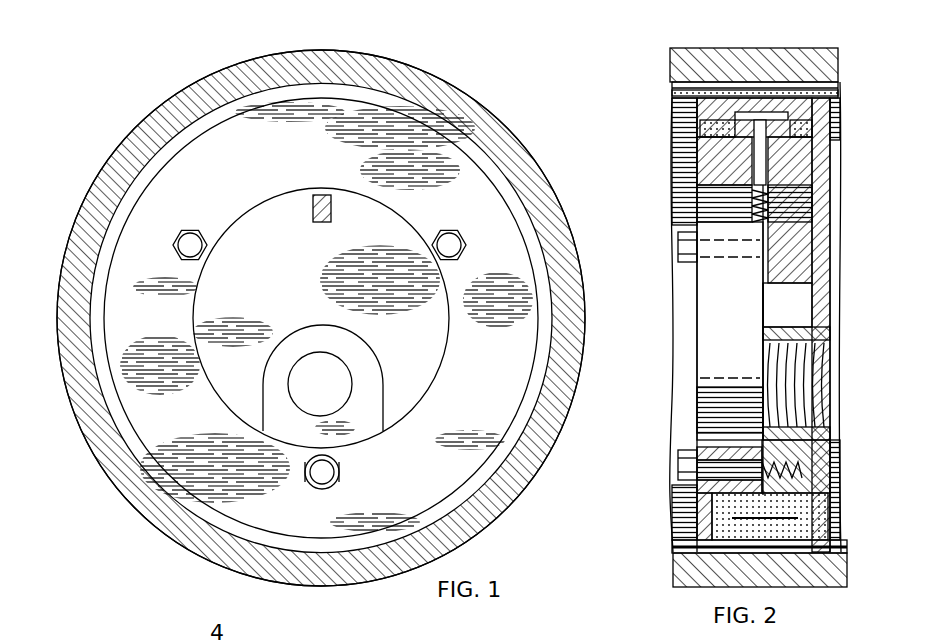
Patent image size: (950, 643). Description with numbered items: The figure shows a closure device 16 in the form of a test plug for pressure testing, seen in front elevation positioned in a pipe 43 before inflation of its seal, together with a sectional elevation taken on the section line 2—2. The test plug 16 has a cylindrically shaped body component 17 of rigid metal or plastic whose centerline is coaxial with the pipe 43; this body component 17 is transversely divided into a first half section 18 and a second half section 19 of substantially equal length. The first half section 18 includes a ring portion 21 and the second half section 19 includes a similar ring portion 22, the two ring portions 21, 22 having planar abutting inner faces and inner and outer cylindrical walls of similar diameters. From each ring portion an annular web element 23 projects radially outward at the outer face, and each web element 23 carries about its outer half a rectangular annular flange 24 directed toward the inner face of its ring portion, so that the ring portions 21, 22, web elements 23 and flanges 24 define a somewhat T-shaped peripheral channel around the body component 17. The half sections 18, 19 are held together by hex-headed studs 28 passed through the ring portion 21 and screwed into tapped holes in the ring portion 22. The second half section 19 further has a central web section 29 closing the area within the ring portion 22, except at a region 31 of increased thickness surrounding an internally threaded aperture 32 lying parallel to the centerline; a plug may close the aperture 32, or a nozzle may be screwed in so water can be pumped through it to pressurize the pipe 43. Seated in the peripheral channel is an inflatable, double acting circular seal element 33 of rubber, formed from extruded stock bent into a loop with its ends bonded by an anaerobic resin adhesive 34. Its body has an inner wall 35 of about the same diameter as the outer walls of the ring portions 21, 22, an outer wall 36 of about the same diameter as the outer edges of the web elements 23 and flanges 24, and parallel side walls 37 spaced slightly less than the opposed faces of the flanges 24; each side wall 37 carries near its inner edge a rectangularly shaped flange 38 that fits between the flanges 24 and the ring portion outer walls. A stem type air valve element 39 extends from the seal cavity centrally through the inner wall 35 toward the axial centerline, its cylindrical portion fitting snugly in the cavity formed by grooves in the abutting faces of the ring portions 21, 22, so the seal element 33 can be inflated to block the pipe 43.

In FIG. 1, the section line 2— 2 is at (318, 137).
In FIG. 1, the closure device 16 is at (203, 177).
In FIG. 1, the body component 17 is at (495, 248).
In FIG. 2, the body component 17 is at (722, 358).
In FIG. 1, the first half section 18 is at (450, 383).
In FIG. 2, the first half section 18 is at (723, 292).
In FIG. 2, the second half section 19 is at (790, 308).
In FIG. 1, the ring portion 21 is at (213, 403).
In FIG. 2, the ring portion 21 is at (727, 160).
In FIG. 2, the ring portion 22 is at (797, 167).
In FIG. 1, the annular web element 23 is at (172, 192).
In FIG. 2, the annular web element 23 is at (680, 132).
In FIG. 2, the annular flange 24 is at (840, 88).
In FIG. 1, the hex-headed stud 28 is at (173, 248).
In FIG. 2, the hex-headed stud 28 is at (695, 260).
In FIG. 1, the central web section 29 is at (370, 232).
In FIG. 2, the central web section 29 is at (813, 282).
In FIG. 1, the region of increased thickness 31 is at (372, 400).
In FIG. 2, the region of increased thickness 31 is at (763, 335).
In FIG. 1, the internally threaded aperture 32 is at (350, 383).
In FIG. 2, the internally threaded aperture 32 is at (805, 375).
In FIG. 2, the circular seal element 33 is at (745, 531).
In FIG. 2, the anaerobic resin adhesive 34 is at (727, 507).
In FIG. 2, the inner wall 35 is at (813, 117).
In FIG. 2, the outer wall 36 is at (728, 85).
In FIG. 2, the side walls 37 is at (810, 85).
In FIG. 2, the rectangularly shaped flange 38 is at (680, 120).
In FIG. 1, the stem type air valve element 39 is at (313, 225).
In FIG. 2, the stem type air valve element 39 is at (697, 197).
In FIG. 1, the pipe 43 is at (190, 92).
In FIG. 2, the pipe 43 is at (682, 50).